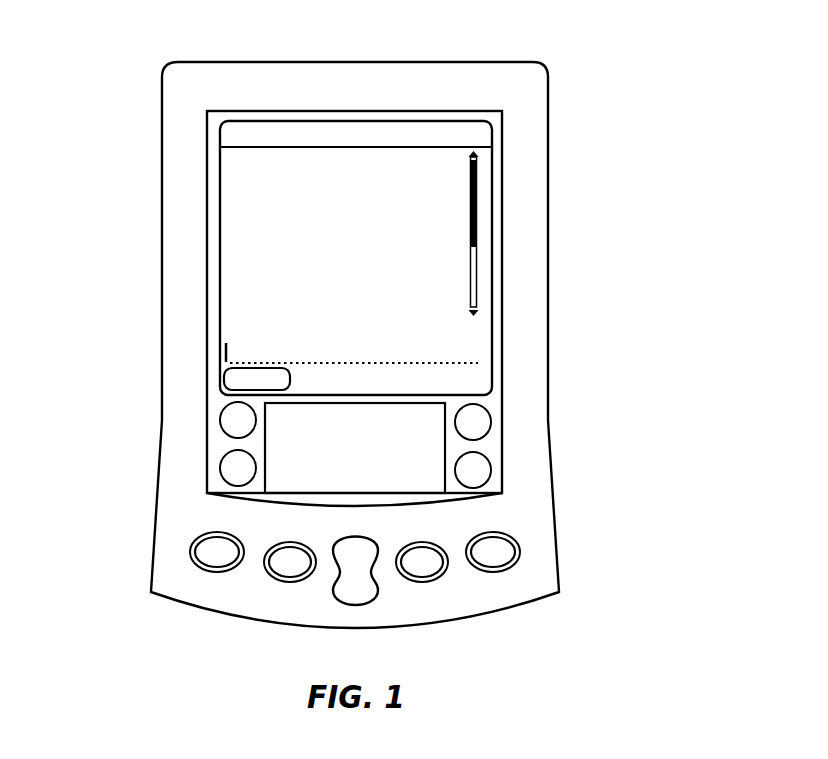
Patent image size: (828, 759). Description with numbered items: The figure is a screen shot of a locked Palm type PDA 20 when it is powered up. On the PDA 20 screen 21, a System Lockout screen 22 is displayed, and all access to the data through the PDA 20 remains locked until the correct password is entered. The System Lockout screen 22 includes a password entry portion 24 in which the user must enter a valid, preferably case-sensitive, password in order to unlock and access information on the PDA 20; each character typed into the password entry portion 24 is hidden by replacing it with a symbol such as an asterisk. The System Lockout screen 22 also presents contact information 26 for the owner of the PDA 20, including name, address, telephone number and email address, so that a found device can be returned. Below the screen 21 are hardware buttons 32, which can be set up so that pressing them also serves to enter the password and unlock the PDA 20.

The PDA 20 is at (568, 445).
The screen 21 is at (452, 172).
The System Lockout screen 22 is at (433, 227).
The password entry portion 24 is at (362, 348).
The contact information 26 is at (203, 188).
The hardware buttons 32 is at (207, 548).